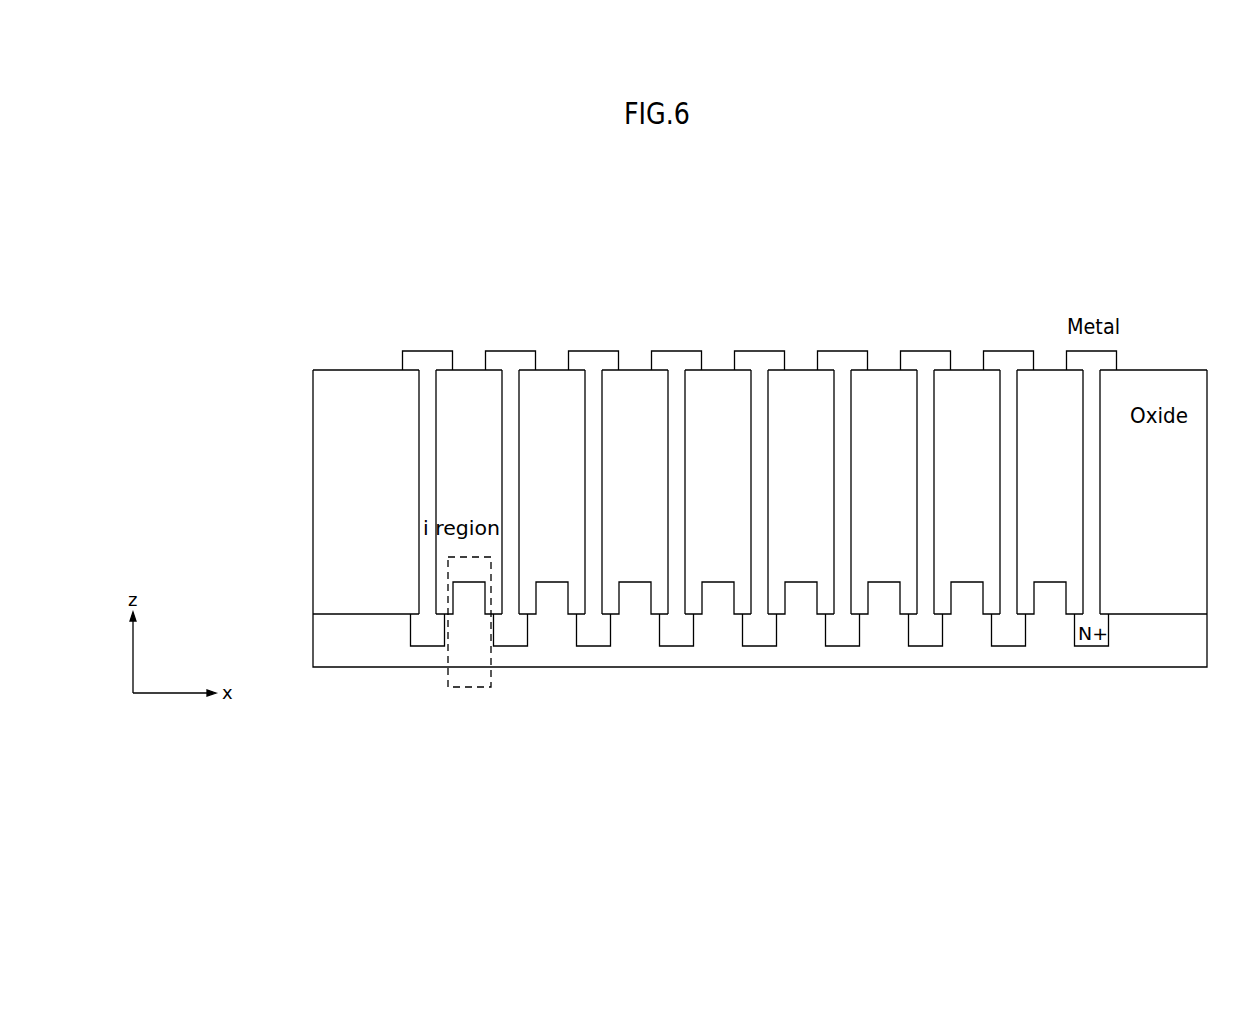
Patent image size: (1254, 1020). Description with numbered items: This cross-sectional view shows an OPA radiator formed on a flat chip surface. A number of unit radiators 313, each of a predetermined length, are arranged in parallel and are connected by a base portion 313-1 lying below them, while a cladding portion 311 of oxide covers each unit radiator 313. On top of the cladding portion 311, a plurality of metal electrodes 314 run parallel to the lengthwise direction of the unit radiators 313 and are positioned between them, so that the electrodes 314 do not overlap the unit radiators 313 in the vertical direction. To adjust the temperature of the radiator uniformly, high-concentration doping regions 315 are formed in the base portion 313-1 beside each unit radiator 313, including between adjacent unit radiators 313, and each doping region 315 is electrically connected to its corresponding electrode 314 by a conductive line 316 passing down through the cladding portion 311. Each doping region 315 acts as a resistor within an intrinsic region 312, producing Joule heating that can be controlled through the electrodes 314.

The cladding portion 311 is at (337, 425).
The intrinsic region 312 is at (467, 657).
The unit radiator 313 is at (636, 598).
The base portion 313-1 is at (804, 653).
The electrode 314 is at (428, 357).
The high-concentration doping region 315 is at (424, 645).
The conductive line 316 is at (427, 482).